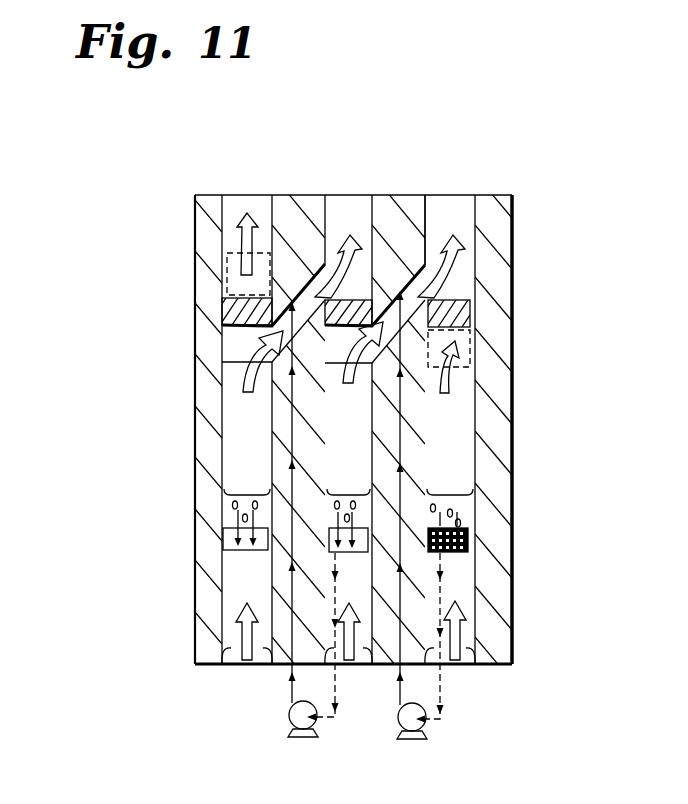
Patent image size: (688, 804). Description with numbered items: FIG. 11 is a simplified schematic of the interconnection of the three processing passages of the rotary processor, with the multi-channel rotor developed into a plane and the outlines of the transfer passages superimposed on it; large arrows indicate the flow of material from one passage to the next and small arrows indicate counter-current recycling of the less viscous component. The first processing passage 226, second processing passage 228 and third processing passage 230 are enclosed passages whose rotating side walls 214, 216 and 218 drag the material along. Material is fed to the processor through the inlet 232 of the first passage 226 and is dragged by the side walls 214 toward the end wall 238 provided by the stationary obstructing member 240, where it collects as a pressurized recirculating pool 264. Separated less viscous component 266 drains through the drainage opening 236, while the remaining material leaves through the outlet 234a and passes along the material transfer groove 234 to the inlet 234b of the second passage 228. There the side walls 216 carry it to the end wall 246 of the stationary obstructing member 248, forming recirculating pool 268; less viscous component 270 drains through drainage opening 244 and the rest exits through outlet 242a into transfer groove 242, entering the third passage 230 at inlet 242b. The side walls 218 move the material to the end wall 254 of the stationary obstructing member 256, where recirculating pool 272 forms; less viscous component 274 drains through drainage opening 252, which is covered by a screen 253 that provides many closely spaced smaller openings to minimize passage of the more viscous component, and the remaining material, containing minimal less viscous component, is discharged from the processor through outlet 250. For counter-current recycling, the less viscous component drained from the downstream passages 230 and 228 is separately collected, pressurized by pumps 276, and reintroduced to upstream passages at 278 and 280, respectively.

The side walls 214 is at (232, 667).
The side walls 216 is at (383, 664).
The side walls 218 is at (450, 665).
The first processing passage 226 is at (230, 580).
The second processing passage 228 is at (337, 514).
The third processing passage 230 is at (463, 605).
The inlet 232 is at (227, 284).
The material transfer groove 234 is at (306, 205).
The outlet 234a is at (240, 350).
The inlet 234b is at (362, 232).
The drainage opening 236 is at (224, 550).
The end wall 238 is at (238, 330).
The stationary obstructing member 240 is at (225, 308).
The material transfer groove 242 is at (470, 320).
The outlet 242a is at (327, 363).
The inlet 242b is at (458, 280).
The drainage opening 244 is at (480, 497).
The end wall 246 is at (437, 230).
The stationary obstructing member 248 is at (418, 197).
The outlet 250 is at (472, 370).
The drainage opening 252 is at (458, 555).
The screen 253 is at (468, 540).
The end wall 254 is at (476, 352).
The stationary obstructing member 256 is at (470, 333).
The recirculating pool 264 is at (226, 494).
The less viscous component 266 is at (235, 504).
The recirculating pool 268 is at (272, 492).
The less viscous component 270 is at (370, 496).
The recirculating pool 272 is at (470, 505).
The less viscous component 274 is at (460, 505).
The pumps 276 is at (320, 728).
The reintroduction point 278 is at (359, 231).
The reintroduction point 280 is at (260, 233).